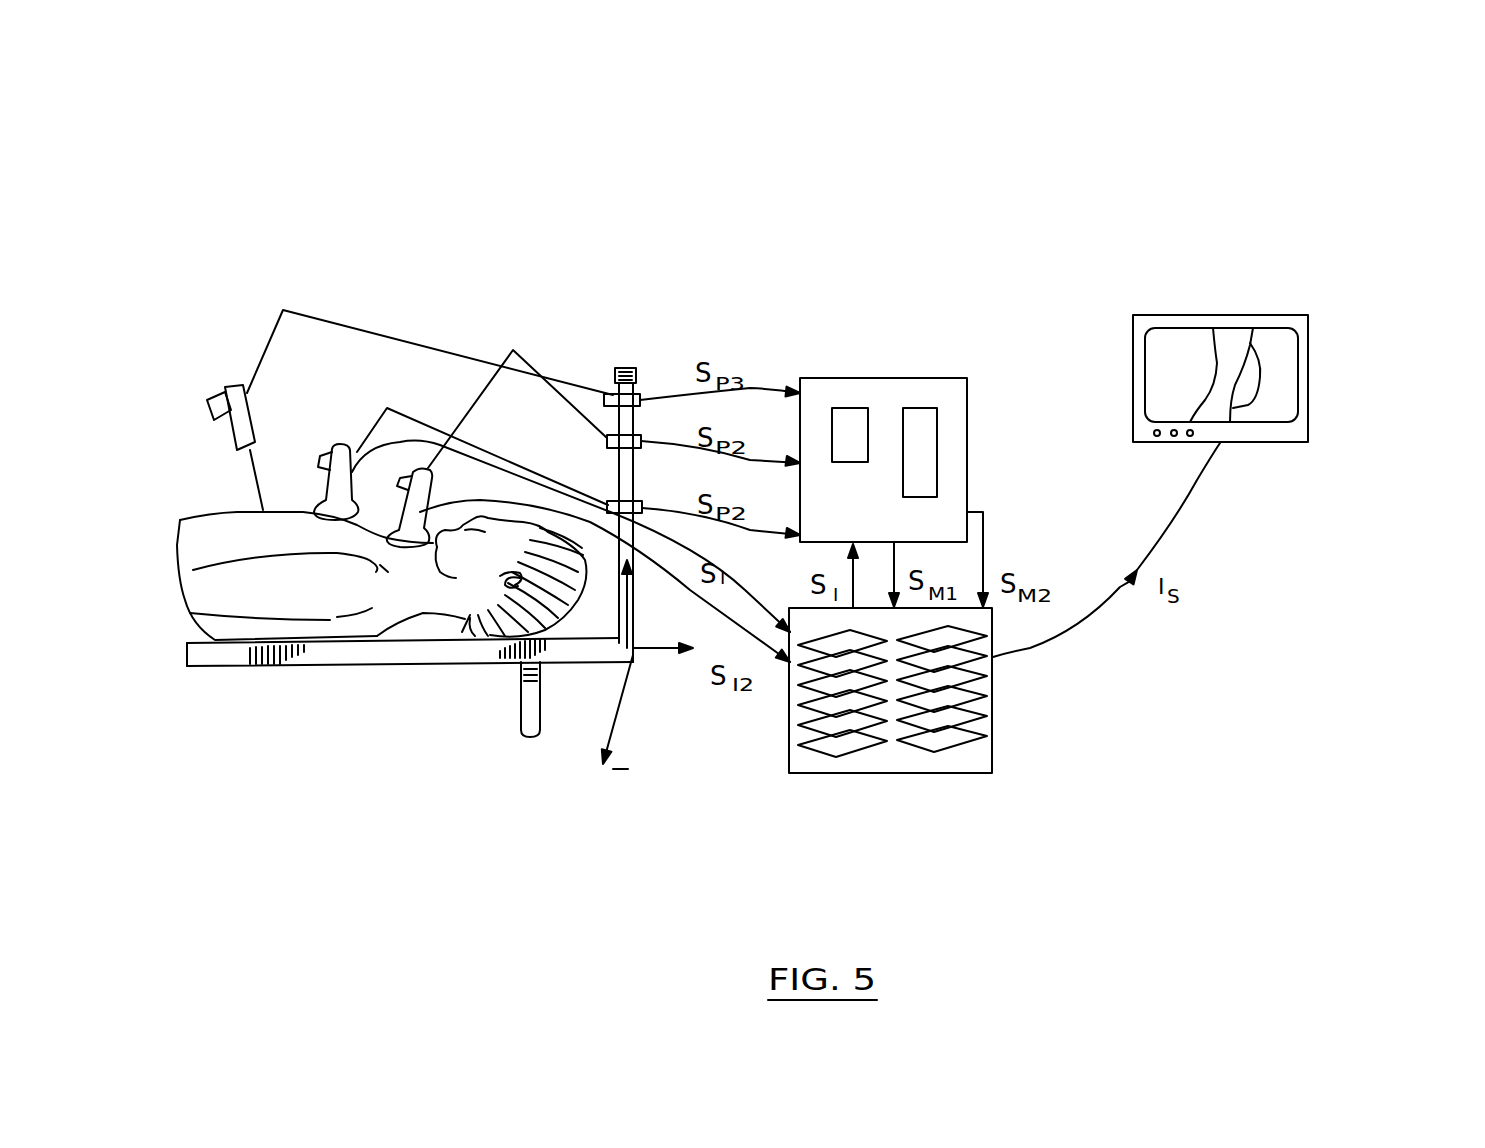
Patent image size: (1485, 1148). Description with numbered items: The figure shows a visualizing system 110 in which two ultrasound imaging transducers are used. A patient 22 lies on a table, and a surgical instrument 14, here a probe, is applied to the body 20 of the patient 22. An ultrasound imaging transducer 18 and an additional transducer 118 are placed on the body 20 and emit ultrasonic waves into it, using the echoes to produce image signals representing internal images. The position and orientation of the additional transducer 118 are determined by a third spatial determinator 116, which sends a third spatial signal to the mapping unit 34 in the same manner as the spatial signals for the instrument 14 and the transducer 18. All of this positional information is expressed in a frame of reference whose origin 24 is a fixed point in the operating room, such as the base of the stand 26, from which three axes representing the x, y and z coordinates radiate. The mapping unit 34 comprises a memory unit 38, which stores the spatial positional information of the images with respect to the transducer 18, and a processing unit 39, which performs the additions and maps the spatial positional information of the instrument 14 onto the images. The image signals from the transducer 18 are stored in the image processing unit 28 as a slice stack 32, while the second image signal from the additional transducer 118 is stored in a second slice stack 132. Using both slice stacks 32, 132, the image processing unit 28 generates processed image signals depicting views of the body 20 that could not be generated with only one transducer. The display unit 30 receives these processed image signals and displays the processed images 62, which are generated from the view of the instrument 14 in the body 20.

The system 110 is at (205, 205).
The surgical instrument 14 is at (222, 378).
The body 20 is at (200, 510).
The ultrasound imaging transducer 18 is at (335, 447).
The third spatial determinator 116 is at (405, 467).
The additional transducer 118 is at (432, 490).
The patient 22 is at (457, 622).
The stand 26 is at (643, 558).
The origin 24 is at (640, 658).
The mapping unit 34 is at (926, 358).
The memory unit 38 is at (845, 391).
The processing unit 39 is at (951, 415).
The image processing unit 28 is at (824, 789).
The slice stack 32 is at (996, 689).
The second slice stack 132 is at (882, 757).
The display unit 30 is at (1214, 300).
The processed images 62 is at (1282, 351).